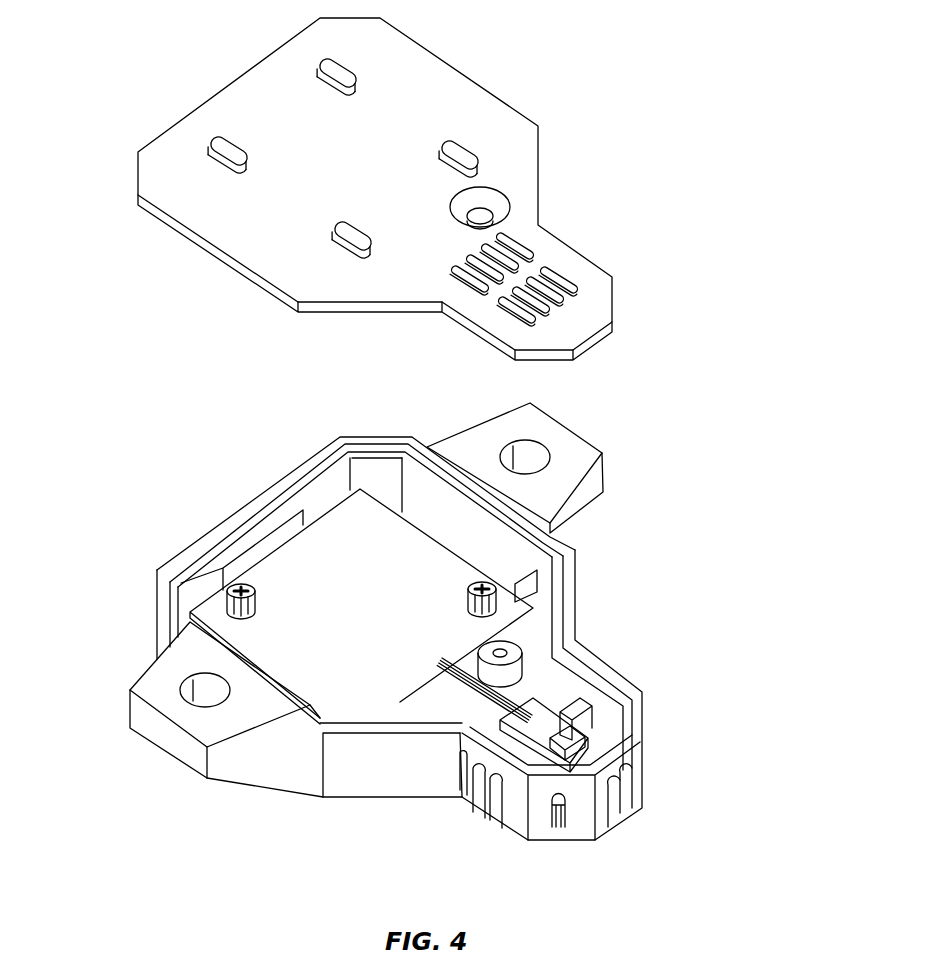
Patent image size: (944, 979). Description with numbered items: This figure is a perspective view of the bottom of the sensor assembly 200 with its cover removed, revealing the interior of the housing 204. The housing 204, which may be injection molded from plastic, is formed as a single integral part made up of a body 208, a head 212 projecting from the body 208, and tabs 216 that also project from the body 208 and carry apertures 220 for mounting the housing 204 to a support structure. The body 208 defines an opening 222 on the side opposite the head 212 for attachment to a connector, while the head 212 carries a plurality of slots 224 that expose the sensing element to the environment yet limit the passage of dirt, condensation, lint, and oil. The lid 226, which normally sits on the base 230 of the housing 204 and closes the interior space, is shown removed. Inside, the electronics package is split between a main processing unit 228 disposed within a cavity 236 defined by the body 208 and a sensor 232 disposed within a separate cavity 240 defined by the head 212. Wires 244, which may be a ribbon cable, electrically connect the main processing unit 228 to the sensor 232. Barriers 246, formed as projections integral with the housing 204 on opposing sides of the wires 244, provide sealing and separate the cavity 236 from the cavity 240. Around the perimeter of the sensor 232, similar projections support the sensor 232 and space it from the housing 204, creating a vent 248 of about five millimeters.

The sensor assembly 200 is at (90, 318).
The housing 204 is at (190, 445).
The body 208 is at (378, 443).
The head 212 is at (640, 694).
The tabs 216 is at (568, 432).
The apertures 220 is at (205, 697).
The opening 222 is at (260, 547).
The slots 224 is at (498, 807).
The lid 226 is at (479, 94).
The main processing unit 228 is at (358, 698).
The base 230 is at (157, 592).
The sensor 232 is at (620, 807).
The cavity 236 is at (357, 485).
The cavity 240 is at (622, 728).
The wires 244 is at (440, 668).
The barriers 246 is at (480, 723).
The vent 248 is at (570, 705).